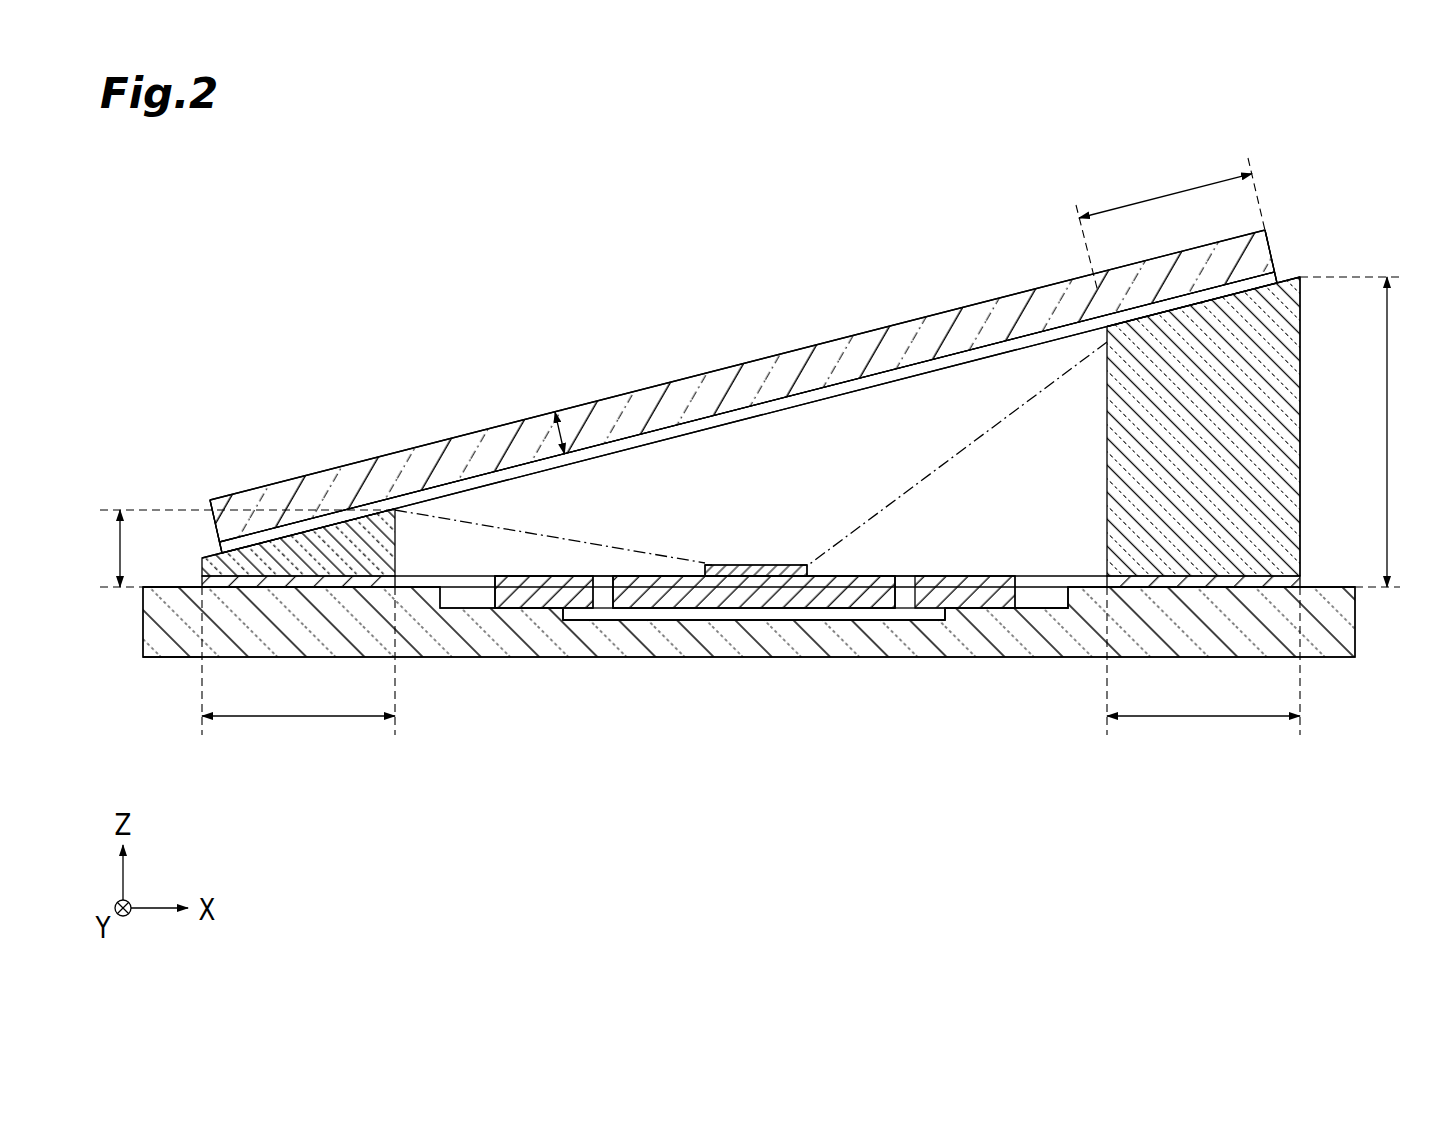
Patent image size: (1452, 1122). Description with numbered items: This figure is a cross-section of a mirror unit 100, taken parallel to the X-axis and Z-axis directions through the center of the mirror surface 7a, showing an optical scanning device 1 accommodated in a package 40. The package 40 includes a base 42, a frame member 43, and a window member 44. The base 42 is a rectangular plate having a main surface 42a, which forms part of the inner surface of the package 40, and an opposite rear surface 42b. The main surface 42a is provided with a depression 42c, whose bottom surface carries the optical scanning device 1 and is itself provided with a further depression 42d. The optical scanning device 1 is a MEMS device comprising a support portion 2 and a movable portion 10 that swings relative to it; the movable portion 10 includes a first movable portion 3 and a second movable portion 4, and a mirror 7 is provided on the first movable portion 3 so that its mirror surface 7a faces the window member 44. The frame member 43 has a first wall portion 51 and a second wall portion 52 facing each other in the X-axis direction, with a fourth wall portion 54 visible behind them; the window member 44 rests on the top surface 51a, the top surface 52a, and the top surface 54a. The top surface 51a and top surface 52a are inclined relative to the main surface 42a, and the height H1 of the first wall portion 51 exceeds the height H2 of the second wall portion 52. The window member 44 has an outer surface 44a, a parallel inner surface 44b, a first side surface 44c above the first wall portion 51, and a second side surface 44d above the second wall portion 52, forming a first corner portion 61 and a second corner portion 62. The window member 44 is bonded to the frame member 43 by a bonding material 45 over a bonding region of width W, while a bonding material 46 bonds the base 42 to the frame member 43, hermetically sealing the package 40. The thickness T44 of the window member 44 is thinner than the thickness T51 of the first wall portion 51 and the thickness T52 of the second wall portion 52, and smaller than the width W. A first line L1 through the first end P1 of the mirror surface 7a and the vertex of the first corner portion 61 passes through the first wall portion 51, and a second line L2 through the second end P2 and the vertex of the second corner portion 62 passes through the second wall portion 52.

The mirror unit 100 is at (1320, 138).
The optical scanning device 1 is at (995, 572).
The support portion 2 is at (540, 590).
The first movable portion 3 is at (735, 600).
The second movable portion 4 is at (754, 592).
The mirror 7 is at (756, 570).
The mirror surface 7a is at (770, 565).
The movable portion 10 is at (822, 622).
The package 40 is at (1332, 658).
The base 42 is at (460, 647).
The main surface 42a is at (165, 582).
The rear surface 42b is at (172, 658).
The depression 42c is at (1062, 600).
The depression 42d is at (940, 612).
The frame member 43 is at (1301, 408).
The window member 44 is at (690, 382).
The outer surface 44a is at (768, 357).
The inner surface 44b is at (836, 381).
The first side surface 44c is at (1274, 256).
The second side surface 44d is at (213, 512).
The bonding material 45 is at (1280, 275).
The bonding material 46 is at (1260, 578).
The first wall portion 51 is at (1267, 480).
The top surface 51a is at (1222, 288).
The second wall portion 52 is at (232, 566).
The top surface 52a is at (310, 530).
The fourth wall portion 54 is at (1005, 368).
The top surface 54a is at (944, 366).
The first corner portion 61 is at (1267, 228).
The second corner portion 62 is at (211, 503).
The thickness of the window member T44 is at (578, 405).
The thickness of the first wall portion T51 is at (1207, 718).
The thickness of the second wall portion T52 is at (297, 718).
The height of the first wall portion H1 is at (1390, 428).
The height of the second wall portion H2 is at (118, 552).
The width of the bonding region W is at (1160, 196).
The first line L1 is at (970, 444).
The second line L2 is at (600, 546).
The first end P1 is at (808, 572).
The second end P2 is at (706, 565).